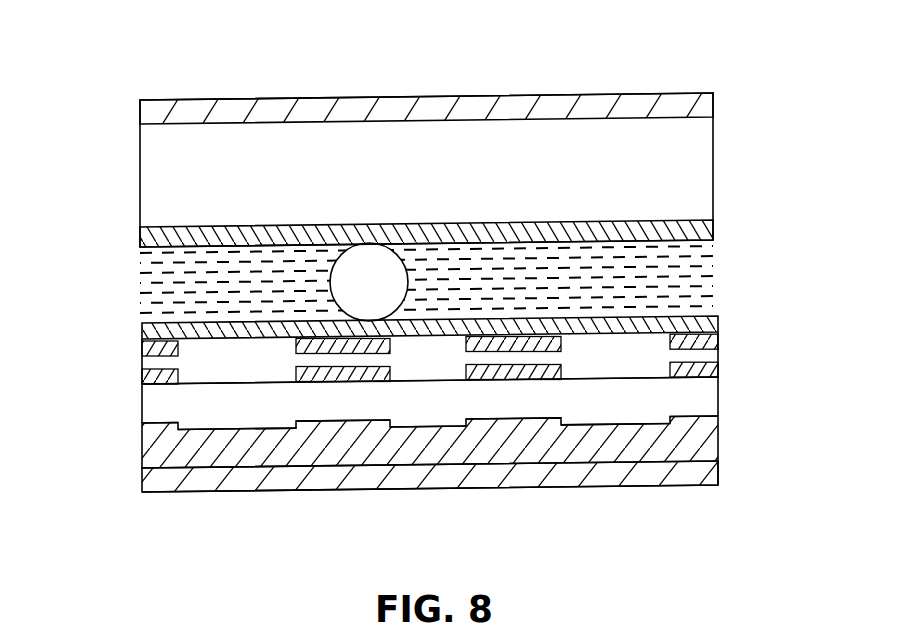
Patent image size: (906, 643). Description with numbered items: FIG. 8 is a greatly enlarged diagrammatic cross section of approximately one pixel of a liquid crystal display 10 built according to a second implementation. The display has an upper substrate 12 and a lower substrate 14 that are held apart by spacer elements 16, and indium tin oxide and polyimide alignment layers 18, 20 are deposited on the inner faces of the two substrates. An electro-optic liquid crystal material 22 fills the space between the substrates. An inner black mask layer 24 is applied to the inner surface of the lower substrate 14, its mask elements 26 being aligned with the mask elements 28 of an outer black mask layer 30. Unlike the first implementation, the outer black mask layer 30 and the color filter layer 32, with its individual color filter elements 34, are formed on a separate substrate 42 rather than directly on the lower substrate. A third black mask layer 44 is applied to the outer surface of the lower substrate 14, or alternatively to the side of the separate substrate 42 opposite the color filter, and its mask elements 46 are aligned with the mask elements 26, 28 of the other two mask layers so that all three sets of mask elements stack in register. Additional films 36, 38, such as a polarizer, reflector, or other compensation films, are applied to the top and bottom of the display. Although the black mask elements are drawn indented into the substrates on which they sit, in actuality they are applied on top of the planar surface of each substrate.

The liquid crystal display 10 is at (212, 66).
The upper substrate 12 is at (705, 163).
The lower substrate 14 is at (231, 350).
The spacer elements 16 is at (356, 296).
The ITO and polyimide alignment layer 18 is at (140, 232).
The ITO and polyimide alignment layer 20 is at (142, 328).
The electro-optic liquid crystal material 22 is at (612, 262).
The inner black mask layer 24 is at (118, 344).
The mask elements of the inner black mask layer 26 is at (295, 348).
The mask elements of the outer black mask layer 28 is at (297, 428).
The outer black mask layer 30 is at (333, 433).
The color filter layer 32 is at (683, 458).
The color filter elements 34 is at (240, 440).
The additional film 36 is at (557, 100).
The additional film 38 is at (312, 477).
The separate substrate 42 is at (350, 405).
The third black mask layer 44 is at (163, 352).
The mask elements of the third mask layer 46 is at (383, 377).